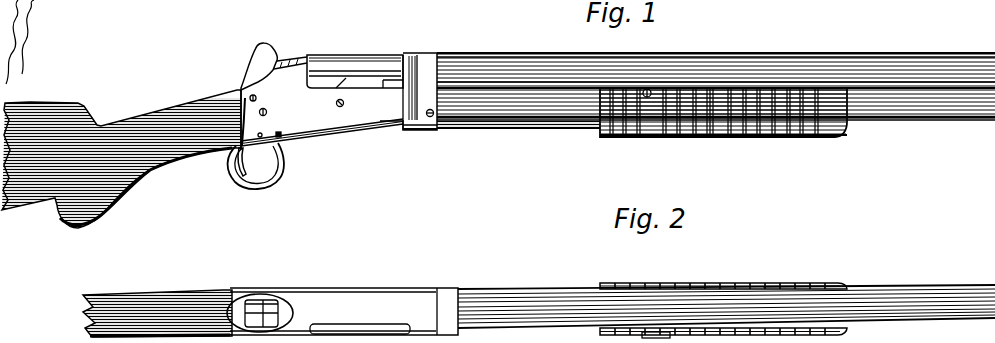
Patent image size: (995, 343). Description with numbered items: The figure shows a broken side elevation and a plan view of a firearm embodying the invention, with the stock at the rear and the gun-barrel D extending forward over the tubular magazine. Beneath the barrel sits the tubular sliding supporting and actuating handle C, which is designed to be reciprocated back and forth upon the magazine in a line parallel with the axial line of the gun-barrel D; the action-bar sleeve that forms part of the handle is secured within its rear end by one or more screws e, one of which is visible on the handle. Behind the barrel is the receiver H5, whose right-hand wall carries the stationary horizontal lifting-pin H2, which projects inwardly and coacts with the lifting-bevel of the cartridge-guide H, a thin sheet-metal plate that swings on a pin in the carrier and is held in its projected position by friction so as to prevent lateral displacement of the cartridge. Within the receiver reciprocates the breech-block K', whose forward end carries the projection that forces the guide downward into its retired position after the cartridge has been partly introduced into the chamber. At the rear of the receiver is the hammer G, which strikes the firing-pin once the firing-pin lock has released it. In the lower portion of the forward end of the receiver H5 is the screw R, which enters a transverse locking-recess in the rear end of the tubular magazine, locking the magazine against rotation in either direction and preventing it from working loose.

In FIG. 1, the hammer G is at (274, 57).
In FIG. 2, the hammer G is at (283, 305).
In FIG. 1, the breech-block K' is at (355, 61).
In FIG. 1, the cartridge-guide H is at (363, 85).
In FIG. 1, the receiver H5 is at (355, 120).
In FIG. 2, the receiver H5 is at (353, 300).
In FIG. 1, the lifting-pin H2 is at (283, 142).
In FIG. 1, the screw R is at (428, 117).
In FIG. 1, the screw e is at (648, 88).
In FIG. 1, the gun-barrel D is at (852, 62).
In FIG. 2, the gun-barrel D is at (903, 290).
In FIG. 1, the tubular sliding supporting and actuating handle C is at (773, 138).
In FIG. 2, the tubular sliding supporting and actuating handle C is at (778, 283).